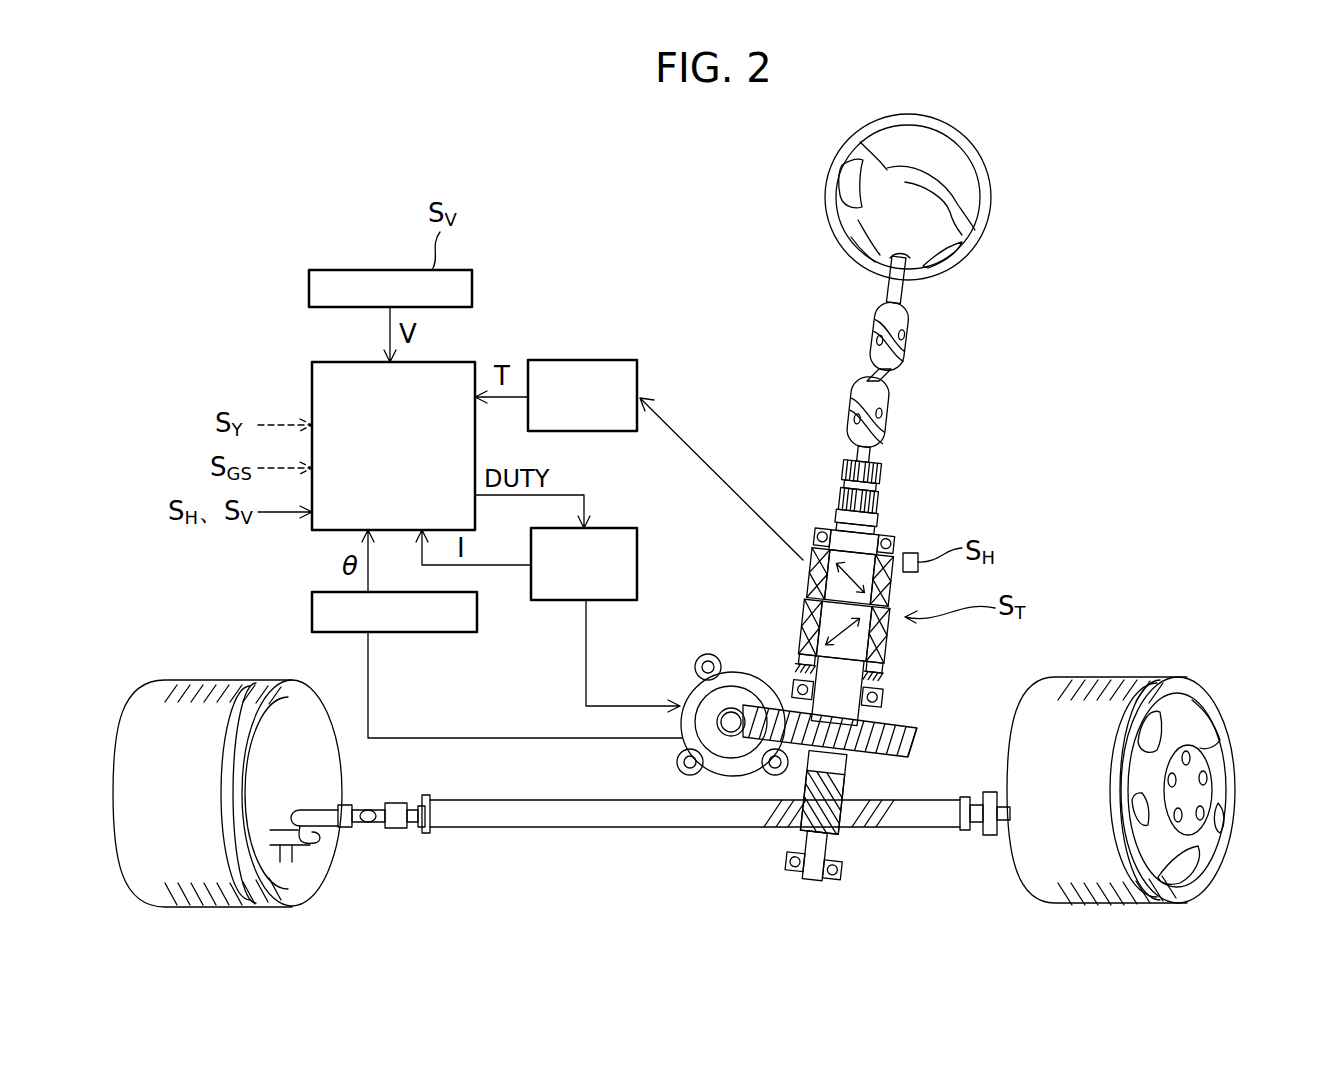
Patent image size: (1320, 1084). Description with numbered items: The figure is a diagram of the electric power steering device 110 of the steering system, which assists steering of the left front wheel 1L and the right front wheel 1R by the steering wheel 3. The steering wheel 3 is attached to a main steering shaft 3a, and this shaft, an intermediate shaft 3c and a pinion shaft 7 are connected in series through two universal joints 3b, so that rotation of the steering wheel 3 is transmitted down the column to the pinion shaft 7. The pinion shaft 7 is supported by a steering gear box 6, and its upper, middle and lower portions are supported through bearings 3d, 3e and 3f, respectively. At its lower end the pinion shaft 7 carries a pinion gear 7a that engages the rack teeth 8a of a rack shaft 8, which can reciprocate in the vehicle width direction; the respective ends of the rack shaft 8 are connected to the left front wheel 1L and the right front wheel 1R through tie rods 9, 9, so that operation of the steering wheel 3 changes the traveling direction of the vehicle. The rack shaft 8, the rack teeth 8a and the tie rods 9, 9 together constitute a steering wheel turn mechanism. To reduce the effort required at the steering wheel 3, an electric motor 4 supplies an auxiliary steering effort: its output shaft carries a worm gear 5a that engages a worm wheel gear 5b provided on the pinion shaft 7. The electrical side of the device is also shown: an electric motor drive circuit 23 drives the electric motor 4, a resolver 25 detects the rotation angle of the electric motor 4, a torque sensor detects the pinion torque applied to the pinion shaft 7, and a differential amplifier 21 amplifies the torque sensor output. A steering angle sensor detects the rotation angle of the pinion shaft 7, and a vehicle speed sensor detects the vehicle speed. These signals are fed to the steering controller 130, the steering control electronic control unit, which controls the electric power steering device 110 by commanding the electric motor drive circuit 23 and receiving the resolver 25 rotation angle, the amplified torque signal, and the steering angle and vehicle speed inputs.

The electric power steering device 110 is at (1138, 165).
The steering controller 130 is at (312, 388).
The differential amplifier 21 is at (605, 360).
The electric motor drive circuit 23 is at (612, 528).
The resolver 25 is at (420, 632).
The steering wheel 3 is at (990, 207).
The main steering shaft 3a is at (910, 292).
The universal joints 3b is at (908, 348).
The shaft 3c is at (892, 392).
The bearing 3d is at (882, 540).
The bearing 3e is at (886, 700).
The bearing 3f is at (843, 870).
The electric motor 4 is at (678, 686).
The worm gear 5a is at (722, 668).
The worm wheel gear 5b is at (910, 722).
The steering gear box 6 is at (793, 905).
The pinion shaft 7 is at (842, 768).
The pinion gear 7a is at (836, 822).
The rack shaft 8 is at (512, 828).
The rack teeth 8a is at (780, 827).
The tie rods 9 is at (352, 835).
The right front wheel 1R is at (185, 680).
The left front wheel 1L is at (1210, 697).